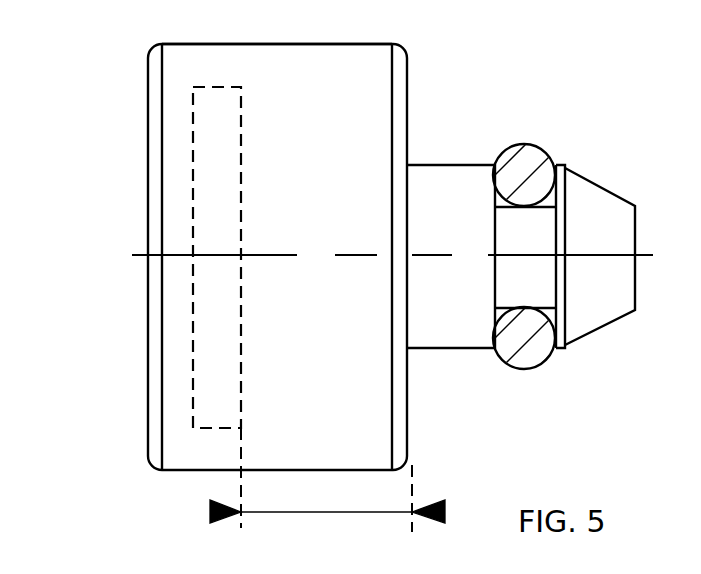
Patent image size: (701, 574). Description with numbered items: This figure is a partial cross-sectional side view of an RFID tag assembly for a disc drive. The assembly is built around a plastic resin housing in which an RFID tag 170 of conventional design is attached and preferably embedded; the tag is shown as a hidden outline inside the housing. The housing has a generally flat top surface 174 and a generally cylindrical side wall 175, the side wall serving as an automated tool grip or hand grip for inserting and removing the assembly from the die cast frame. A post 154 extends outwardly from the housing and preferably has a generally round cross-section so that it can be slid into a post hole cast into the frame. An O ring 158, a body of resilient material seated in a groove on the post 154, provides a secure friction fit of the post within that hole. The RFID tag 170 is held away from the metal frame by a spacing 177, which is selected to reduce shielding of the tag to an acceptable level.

The post 154 is at (443, 165).
The O ring 158 is at (522, 370).
The RFID tag 170 is at (192, 118).
The top surface 174 is at (148, 196).
The side wall 175 is at (275, 44).
The spacing 177 is at (212, 512).